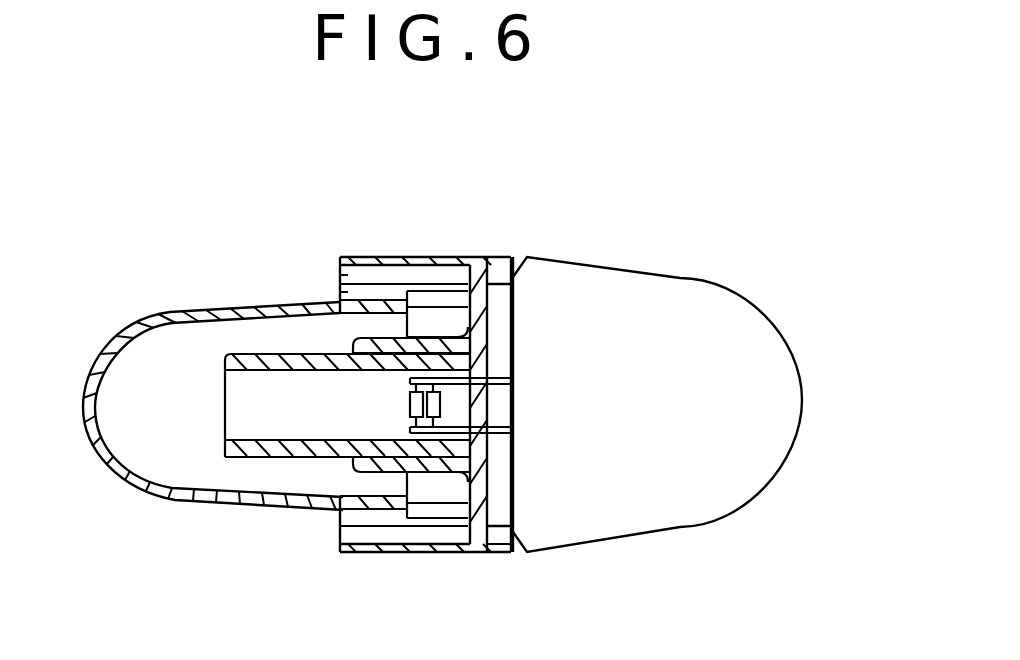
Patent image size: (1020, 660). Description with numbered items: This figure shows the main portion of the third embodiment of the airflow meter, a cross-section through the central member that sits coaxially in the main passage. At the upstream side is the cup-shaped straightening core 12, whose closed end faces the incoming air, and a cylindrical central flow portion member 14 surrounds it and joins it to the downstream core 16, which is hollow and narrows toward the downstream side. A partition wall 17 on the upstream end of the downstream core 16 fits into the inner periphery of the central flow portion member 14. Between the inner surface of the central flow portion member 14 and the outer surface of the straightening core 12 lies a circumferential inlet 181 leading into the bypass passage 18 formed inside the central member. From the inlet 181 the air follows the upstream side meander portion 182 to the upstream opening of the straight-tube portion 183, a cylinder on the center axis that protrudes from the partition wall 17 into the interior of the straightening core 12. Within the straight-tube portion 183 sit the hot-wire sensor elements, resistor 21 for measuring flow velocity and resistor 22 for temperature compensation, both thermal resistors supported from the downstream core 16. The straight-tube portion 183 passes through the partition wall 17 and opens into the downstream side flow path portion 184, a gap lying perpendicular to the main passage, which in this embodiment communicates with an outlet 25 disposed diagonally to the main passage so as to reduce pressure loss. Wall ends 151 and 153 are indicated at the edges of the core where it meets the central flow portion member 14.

The straightening core 12 is at (170, 313).
The central flow portion member 14 is at (452, 257).
The downstream core 16 is at (680, 278).
The partition wall 17 is at (487, 488).
The bypass passage 18 is at (197, 388).
The resistor for measuring flow velocity 21 is at (410, 405).
The resistor for temperature compensation 22 is at (440, 413).
The outlet 25 is at (520, 257).
The upper wall end 151 is at (340, 293).
The lower wall end 153 is at (342, 516).
The inlet 181 is at (340, 277).
The upstream side meander portion 182 is at (383, 323).
The straight-tube portion 183 is at (247, 425).
The downstream side flow path portion 184 is at (502, 502).